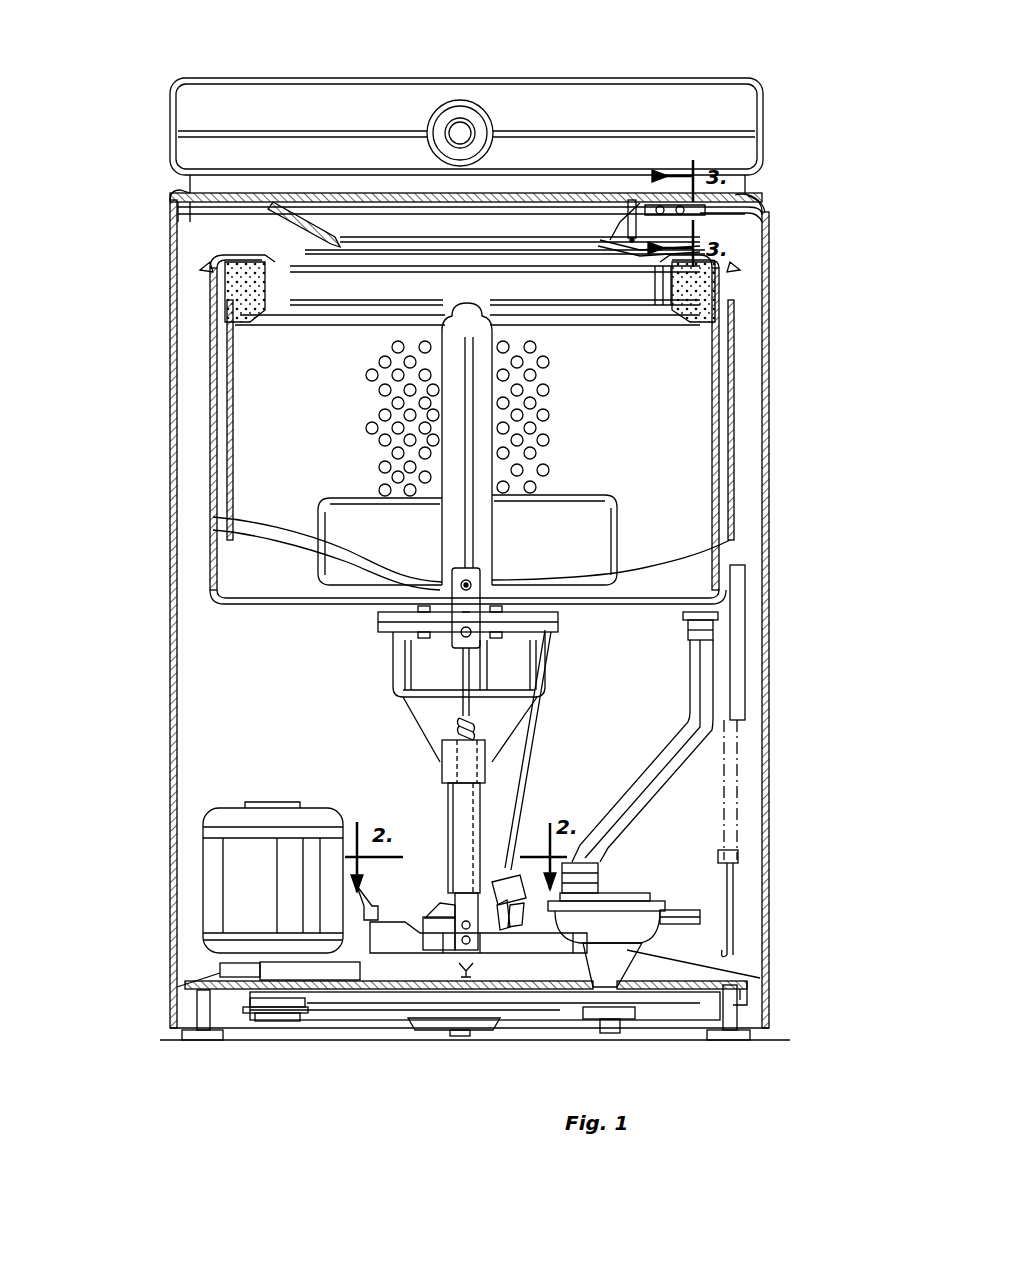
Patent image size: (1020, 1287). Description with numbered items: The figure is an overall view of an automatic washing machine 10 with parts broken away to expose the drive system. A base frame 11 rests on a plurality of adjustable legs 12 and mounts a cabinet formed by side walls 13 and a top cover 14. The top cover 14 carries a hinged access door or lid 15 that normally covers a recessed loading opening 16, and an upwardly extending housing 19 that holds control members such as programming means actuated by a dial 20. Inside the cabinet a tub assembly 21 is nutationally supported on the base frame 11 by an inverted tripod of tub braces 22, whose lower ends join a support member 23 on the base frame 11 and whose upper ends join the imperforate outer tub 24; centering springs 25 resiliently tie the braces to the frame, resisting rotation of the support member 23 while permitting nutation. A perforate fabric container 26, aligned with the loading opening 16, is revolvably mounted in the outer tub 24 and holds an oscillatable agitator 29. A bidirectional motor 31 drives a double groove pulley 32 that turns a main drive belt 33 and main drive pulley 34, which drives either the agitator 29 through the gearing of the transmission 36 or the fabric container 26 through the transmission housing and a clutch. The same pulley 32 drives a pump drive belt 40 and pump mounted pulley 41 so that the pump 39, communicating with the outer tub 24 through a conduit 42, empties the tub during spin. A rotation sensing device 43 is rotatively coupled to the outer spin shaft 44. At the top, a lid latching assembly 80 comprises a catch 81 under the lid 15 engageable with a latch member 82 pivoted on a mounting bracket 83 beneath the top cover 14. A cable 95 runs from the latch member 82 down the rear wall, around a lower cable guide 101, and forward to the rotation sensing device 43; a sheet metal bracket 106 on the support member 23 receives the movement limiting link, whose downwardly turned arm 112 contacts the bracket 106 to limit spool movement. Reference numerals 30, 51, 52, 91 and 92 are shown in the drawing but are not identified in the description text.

The automatic washing machine 10 is at (132, 318).
The base frame 11 is at (677, 992).
The adjustable legs 12 is at (190, 1038).
The side walls 13 is at (170, 758).
The top cover 14 is at (765, 204).
The access door or lid 15 is at (540, 195).
The recessed loading opening 16 is at (470, 268).
The upwardly extending housing 19 is at (764, 118).
The dial 20 is at (482, 95).
The tub assembly 21 is at (290, 620).
The tub braces 22 is at (395, 600).
The support member 23 is at (393, 930).
The outer tub 24 is at (221, 600).
The centering springs 25 is at (455, 663).
The fabric container 26 is at (719, 396).
The agitator 29 is at (585, 496).
The motor mount plate 30 is at (323, 975).
The motor 31 is at (226, 806).
The double groove pulley 32 is at (246, 1010).
The main drive belt 33 is at (370, 1002).
The main drive pulley 34 is at (489, 1032).
The transmission 36 is at (405, 704).
The pump 39 is at (638, 895).
The pump drive belt 40 is at (573, 1017).
The pump mounted pulley 41 is at (632, 1018).
The conduit 42 is at (642, 808).
The rotation sensing device 43 is at (440, 890).
The spin shaft 44 is at (450, 812).
The clip 51 is at (445, 950).
The wedge 52 is at (428, 905).
The lid latching assembly 80 is at (765, 197).
The catch 81 is at (626, 214).
The latch member 82 is at (652, 250).
The mounting bracket 83 is at (663, 200).
The rim flange 91 is at (765, 214).
The space 92 is at (628, 698).
The cable 95 is at (533, 763).
The lower cable guide 101 is at (503, 872).
The sheet metal bracket 106 is at (490, 945).
The downwardly turned arm 112 is at (516, 930).